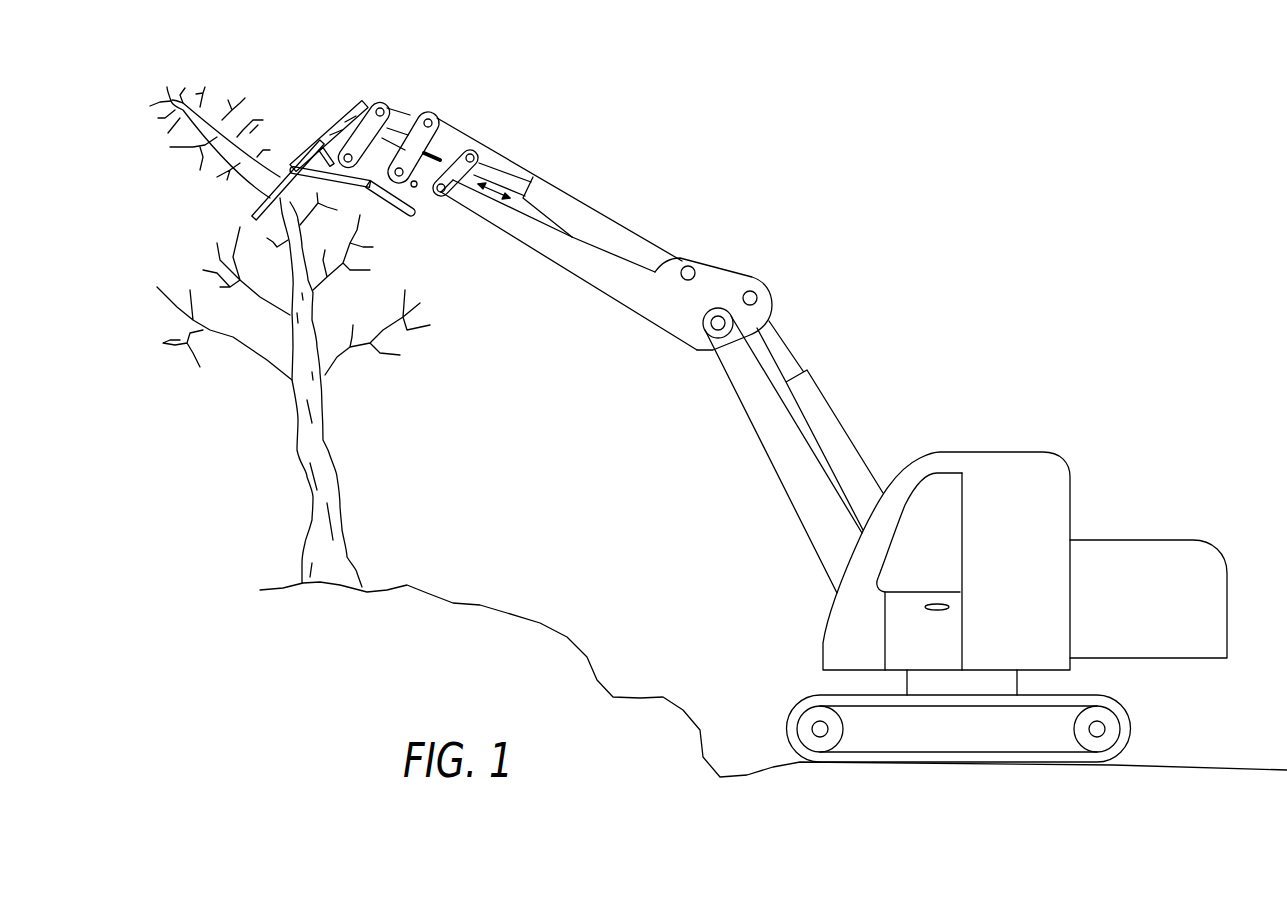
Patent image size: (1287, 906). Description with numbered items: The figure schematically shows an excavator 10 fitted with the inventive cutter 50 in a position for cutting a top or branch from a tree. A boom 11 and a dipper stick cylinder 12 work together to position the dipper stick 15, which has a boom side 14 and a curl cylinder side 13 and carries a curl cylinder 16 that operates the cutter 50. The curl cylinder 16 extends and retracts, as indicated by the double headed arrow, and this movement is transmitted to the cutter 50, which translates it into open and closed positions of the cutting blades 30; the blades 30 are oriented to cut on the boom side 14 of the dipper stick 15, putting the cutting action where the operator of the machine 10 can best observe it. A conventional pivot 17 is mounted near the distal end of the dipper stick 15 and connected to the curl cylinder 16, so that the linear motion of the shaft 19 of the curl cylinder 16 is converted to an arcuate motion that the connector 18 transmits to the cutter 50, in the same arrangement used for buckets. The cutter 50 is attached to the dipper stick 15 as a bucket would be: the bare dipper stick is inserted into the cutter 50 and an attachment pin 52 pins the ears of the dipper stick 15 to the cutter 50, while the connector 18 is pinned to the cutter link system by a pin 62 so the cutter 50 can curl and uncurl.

The excavator 10 is at (1048, 412).
The boom 11 is at (768, 432).
The dipper stick cylinder 12 is at (828, 413).
The curl cylinder side 13 is at (583, 230).
The boom side 14 is at (636, 322).
The dipper stick 15 is at (597, 285).
The curl cylinder 16 is at (628, 238).
The pivot 17 is at (460, 200).
The connector 18 is at (457, 143).
The shaft 19 is at (516, 174).
The blades 30 is at (262, 188).
The cutter 50 is at (417, 88).
The attachment pin 52 is at (410, 196).
The pin 62 is at (437, 127).